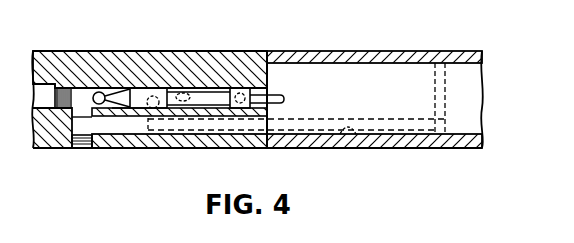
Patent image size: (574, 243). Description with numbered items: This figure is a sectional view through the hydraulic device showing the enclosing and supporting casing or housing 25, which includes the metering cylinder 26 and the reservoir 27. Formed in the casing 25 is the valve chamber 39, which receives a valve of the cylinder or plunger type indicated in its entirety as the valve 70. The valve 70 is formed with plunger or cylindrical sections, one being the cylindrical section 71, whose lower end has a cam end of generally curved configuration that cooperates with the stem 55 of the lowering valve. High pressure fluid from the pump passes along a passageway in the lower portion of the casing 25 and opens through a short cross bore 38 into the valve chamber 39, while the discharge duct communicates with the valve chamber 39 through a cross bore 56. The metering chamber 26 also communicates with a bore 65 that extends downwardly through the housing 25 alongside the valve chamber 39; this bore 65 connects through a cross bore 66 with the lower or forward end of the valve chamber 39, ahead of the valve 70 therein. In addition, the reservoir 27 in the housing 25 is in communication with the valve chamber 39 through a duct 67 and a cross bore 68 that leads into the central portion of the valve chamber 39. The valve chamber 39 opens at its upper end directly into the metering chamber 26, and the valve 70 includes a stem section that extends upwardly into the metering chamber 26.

The casing 25 is at (264, 46).
The metering cylinder 26 is at (367, 62).
The reservoir 27 is at (443, 72).
The cross bore 38 is at (184, 93).
The valve chamber 39 is at (84, 88).
The stem 55 is at (99, 91).
The cross bore 56 is at (268, 74).
The bore 65 is at (128, 125).
The cross bore 66 is at (78, 126).
The duct 67 is at (350, 134).
The cross bore 68 is at (157, 132).
The valve 70 is at (146, 84).
The cylindrical section 71 is at (131, 88).